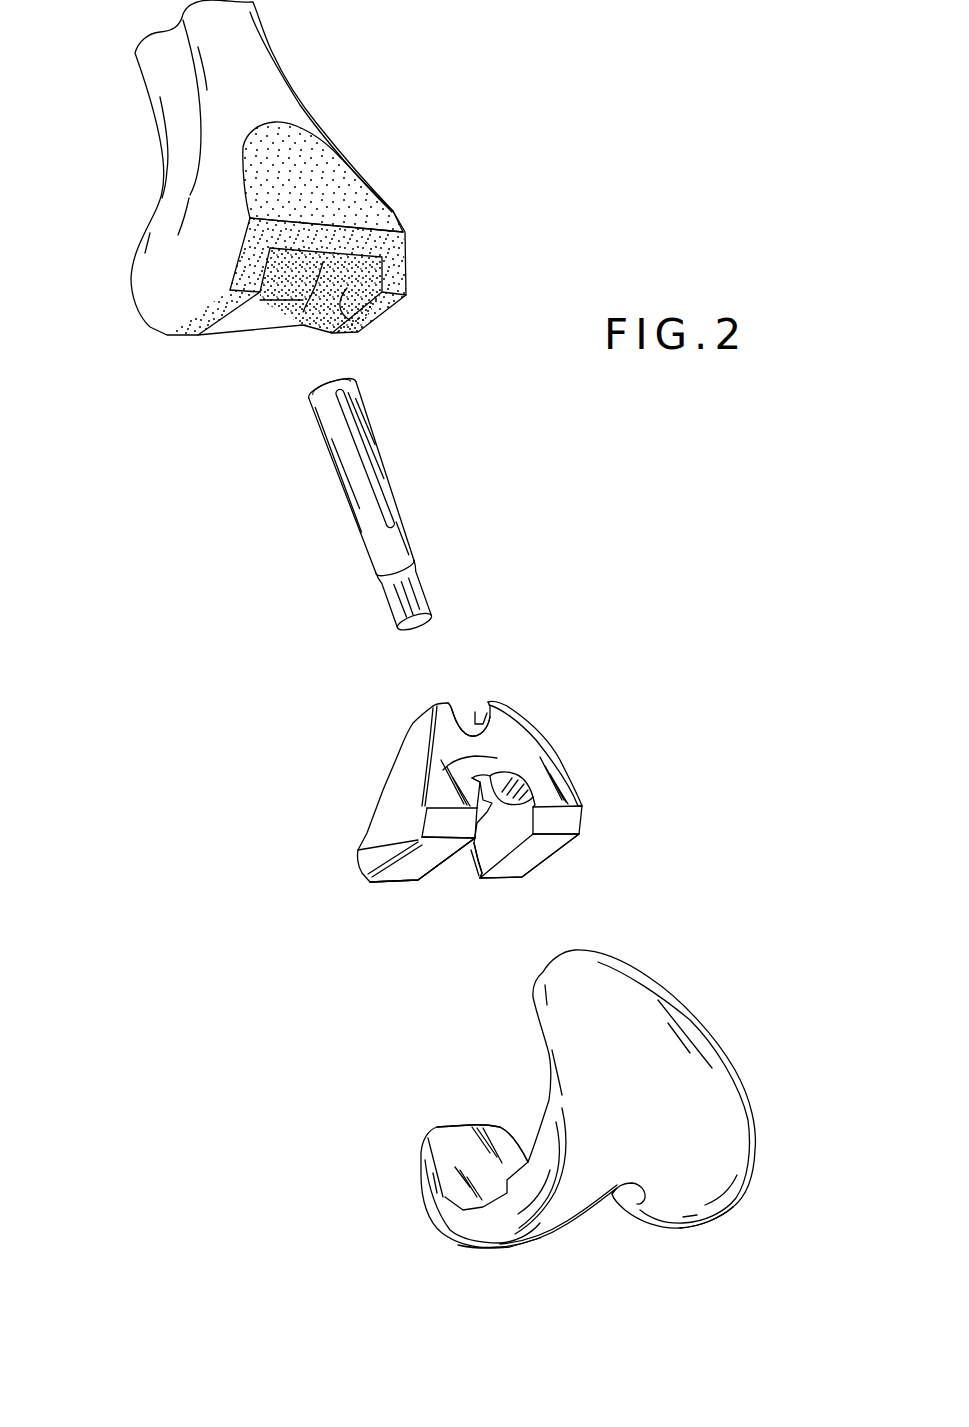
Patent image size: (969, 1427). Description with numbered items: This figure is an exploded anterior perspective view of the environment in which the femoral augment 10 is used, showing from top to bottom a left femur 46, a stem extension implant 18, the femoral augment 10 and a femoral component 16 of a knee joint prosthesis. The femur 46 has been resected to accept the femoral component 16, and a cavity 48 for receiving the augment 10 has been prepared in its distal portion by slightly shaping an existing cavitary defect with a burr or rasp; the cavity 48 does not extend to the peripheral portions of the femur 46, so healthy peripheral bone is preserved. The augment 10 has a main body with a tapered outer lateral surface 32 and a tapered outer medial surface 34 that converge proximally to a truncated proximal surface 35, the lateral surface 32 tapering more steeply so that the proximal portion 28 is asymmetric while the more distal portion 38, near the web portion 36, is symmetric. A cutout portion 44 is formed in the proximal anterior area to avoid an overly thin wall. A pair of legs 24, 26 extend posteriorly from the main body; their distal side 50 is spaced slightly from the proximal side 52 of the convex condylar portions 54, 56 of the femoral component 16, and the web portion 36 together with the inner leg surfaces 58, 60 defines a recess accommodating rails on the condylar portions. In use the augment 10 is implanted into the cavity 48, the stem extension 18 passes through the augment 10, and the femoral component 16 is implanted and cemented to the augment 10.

The femoral augment 10 is at (590, 698).
The femoral component 16 is at (717, 1103).
The stem extension implant 18 is at (408, 532).
The leg 24 is at (380, 842).
The leg 26 is at (563, 845).
The proximal portion 28 is at (462, 733).
The tapered outer lateral surface 32 is at (535, 729).
The tapered outer medial surface 34 is at (408, 771).
The truncated proximal surface 35 is at (448, 698).
The web portion 36 is at (530, 792).
The distal portion 38 is at (492, 758).
The cutout portion 44 is at (471, 727).
The left femur 46 is at (160, 223).
The cavity 48 is at (350, 318).
The distal side 50 is at (405, 863).
The proximal side 52 is at (500, 1127).
The convex condylar portion 54 is at (508, 1247).
The convex condylar portion 56 is at (700, 1228).
The inner leg surface 58 is at (438, 865).
The inner leg surface 60 is at (507, 833).